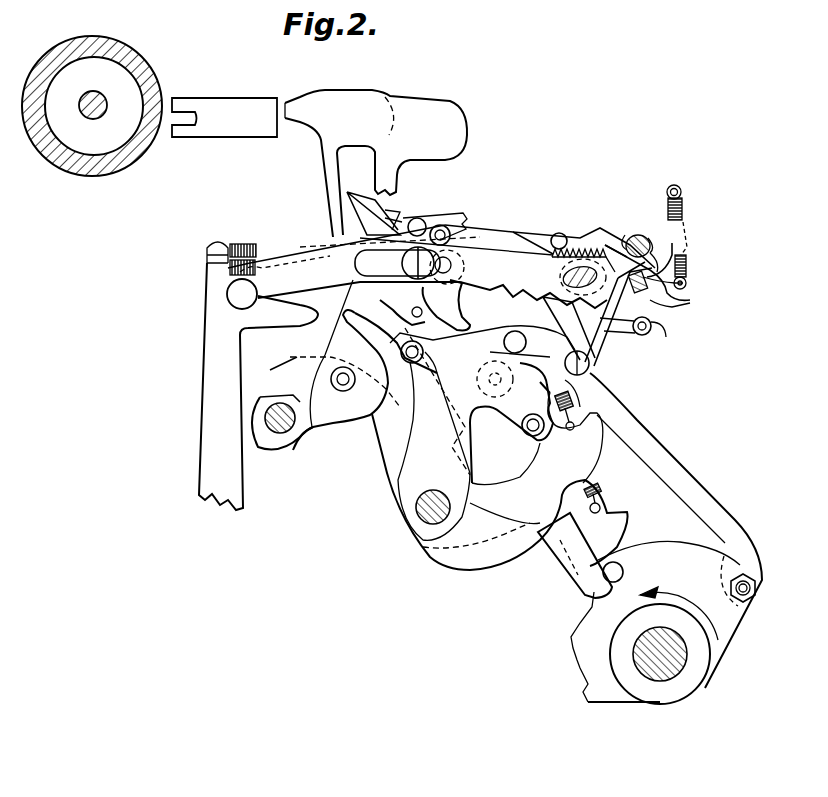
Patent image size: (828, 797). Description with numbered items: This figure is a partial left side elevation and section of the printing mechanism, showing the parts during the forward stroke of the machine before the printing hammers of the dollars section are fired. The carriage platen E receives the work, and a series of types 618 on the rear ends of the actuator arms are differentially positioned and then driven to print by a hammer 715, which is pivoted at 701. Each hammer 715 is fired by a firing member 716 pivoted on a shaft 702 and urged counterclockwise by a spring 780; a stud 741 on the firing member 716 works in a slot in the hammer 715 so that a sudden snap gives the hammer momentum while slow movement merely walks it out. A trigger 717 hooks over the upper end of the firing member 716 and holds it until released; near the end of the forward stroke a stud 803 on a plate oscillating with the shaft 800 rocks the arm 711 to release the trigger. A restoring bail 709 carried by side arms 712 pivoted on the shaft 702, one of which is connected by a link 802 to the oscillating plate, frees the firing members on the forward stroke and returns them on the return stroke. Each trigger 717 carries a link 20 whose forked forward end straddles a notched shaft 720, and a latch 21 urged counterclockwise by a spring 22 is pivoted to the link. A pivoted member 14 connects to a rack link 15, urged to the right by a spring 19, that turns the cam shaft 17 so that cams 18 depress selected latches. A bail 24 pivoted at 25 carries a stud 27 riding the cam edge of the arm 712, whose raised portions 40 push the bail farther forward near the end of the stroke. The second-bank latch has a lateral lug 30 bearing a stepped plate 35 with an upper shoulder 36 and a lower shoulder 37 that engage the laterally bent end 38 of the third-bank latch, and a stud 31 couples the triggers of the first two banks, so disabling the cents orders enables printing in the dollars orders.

The platen E is at (128, 52).
The types 618 is at (220, 105).
The hammer 715 is at (380, 122).
The trigger 717 is at (395, 222).
The pivoted member 14 is at (214, 400).
The link 15 is at (293, 259).
The spring 19 is at (258, 270).
The link 20 is at (483, 232).
The latch 21 is at (572, 241).
The stepped plate 35 is at (622, 252).
The notched shaft 720 is at (560, 275).
The cams 18 is at (635, 229).
The cam shaft 17 is at (647, 242).
The upper shoulder 36 is at (647, 271).
The laterally bent end 38 is at (681, 258).
The spring 22 is at (684, 208).
The lower shoulder 37 is at (672, 295).
The lateral lug 30 is at (652, 328).
The pivot 25 is at (575, 350).
The bail 24 is at (608, 318).
The stud 27 is at (477, 318).
The stud 31 is at (419, 316).
The raised portions 40 is at (528, 345).
The stud 741 is at (340, 390).
The firing member 716 is at (392, 447).
The side arms 712 is at (447, 437).
The pivot 701 is at (278, 432).
The shaft 702 is at (430, 517).
The bail 709 is at (530, 435).
The spring 780 is at (578, 446).
The link 802 is at (728, 530).
The shaft 800 is at (660, 668).
The stud 803 is at (617, 575).
The arm 711 is at (590, 585).